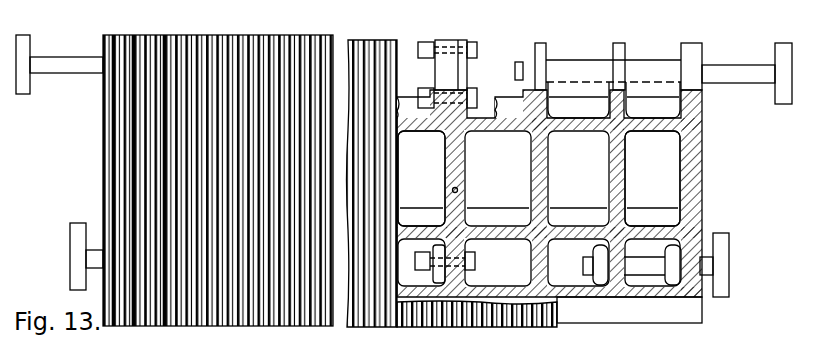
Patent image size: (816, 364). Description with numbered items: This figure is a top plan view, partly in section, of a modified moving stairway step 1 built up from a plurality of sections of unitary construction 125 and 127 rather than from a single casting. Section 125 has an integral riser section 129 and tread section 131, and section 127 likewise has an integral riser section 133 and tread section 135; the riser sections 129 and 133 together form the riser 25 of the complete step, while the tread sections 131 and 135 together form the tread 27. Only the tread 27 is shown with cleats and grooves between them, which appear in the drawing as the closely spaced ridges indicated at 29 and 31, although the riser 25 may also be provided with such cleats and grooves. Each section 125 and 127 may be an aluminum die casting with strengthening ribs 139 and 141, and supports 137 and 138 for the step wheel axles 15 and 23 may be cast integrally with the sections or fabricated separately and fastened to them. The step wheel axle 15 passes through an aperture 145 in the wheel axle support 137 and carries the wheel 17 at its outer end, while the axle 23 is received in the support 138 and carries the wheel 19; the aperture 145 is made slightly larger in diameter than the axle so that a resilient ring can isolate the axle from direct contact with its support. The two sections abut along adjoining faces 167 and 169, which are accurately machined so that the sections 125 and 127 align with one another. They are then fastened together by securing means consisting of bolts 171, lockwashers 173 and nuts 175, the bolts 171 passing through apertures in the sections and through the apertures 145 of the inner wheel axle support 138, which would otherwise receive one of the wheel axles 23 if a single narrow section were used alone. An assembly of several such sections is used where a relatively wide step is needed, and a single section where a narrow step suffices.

The stacked apparatus 1 is at (228, 330).
The step wheel axle 15 is at (58, 57).
The wheel 17 is at (25, 35).
The wheel 19 is at (70, 240).
The step wheel axle 23 is at (95, 250).
The riser 25 is at (312, 326).
The tread 27 is at (383, 30).
The fin 29 is at (163, 42).
The fin 31 is at (133, 42).
The section of unitary construction 125 is at (243, 35).
The section of unitary construction 127 is at (590, 29).
The riser section 129 is at (284, 348).
The tread section 131 is at (122, 166).
The riser section 133 is at (541, 353).
The tread section 135 is at (486, 357).
The wheel axle support 137 is at (696, 43).
The wheel axle support 138 is at (676, 295).
The strengthening rib 139 is at (656, 108).
The strengthening rib 141 is at (610, 170).
The aperture 145 is at (446, 44).
The adjoining face 167 is at (446, 175).
The adjoining face 169 is at (458, 190).
The bolt 171 is at (474, 100).
The lockwasher 173 is at (430, 98).
The nut 175 is at (424, 42).